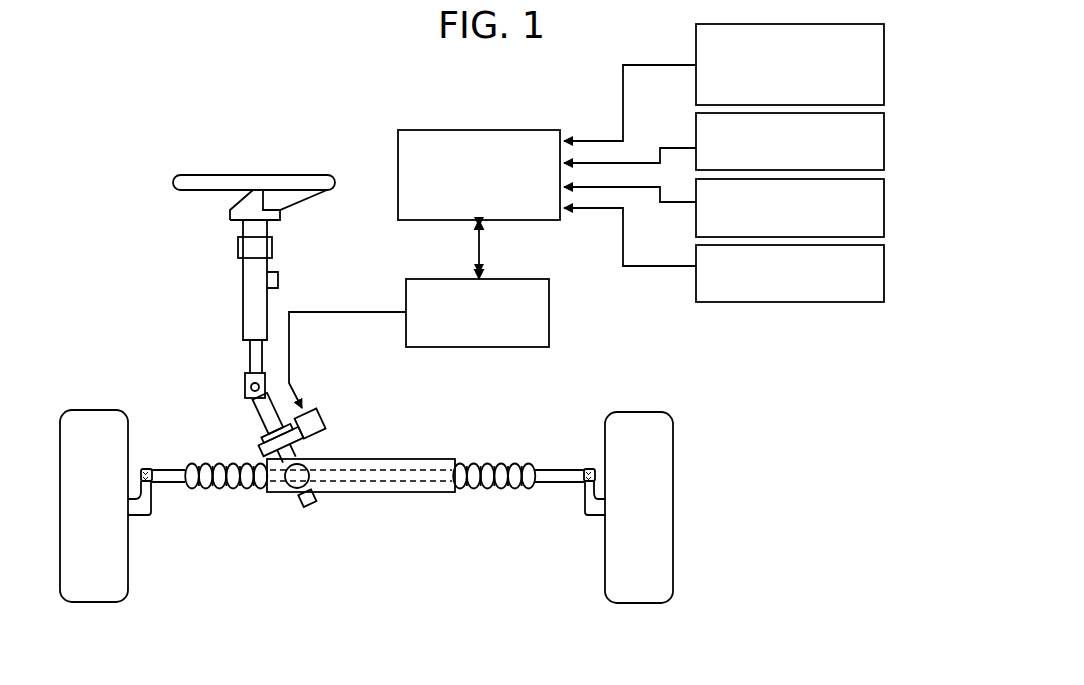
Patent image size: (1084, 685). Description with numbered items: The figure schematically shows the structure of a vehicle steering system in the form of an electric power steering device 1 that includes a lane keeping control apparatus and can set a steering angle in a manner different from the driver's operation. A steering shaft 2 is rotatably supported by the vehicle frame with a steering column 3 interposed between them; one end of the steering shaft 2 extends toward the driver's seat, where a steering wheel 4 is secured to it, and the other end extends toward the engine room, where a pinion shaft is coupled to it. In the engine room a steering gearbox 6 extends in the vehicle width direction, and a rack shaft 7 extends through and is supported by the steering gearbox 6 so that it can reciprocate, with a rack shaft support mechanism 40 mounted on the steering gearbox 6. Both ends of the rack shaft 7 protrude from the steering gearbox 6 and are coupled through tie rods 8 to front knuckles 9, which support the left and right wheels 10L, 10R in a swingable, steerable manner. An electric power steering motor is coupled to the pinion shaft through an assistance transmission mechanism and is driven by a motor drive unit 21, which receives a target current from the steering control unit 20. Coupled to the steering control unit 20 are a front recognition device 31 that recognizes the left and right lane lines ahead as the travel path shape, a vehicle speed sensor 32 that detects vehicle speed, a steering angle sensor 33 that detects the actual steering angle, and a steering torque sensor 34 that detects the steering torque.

The electric power steering device 1 is at (153, 333).
The steering shaft 2 is at (250, 358).
The steering column 3 is at (245, 295).
The steering wheel 4 is at (257, 173).
The steering gearbox 6 is at (383, 492).
The rack shaft 7 is at (434, 461).
The tie rods 8 is at (173, 482).
The front knuckles 9 is at (140, 516).
The right wheel 10R is at (93, 603).
The left wheel 10L is at (638, 604).
The steering control unit 20 is at (480, 128).
The motor drive unit 21 is at (513, 277).
The front recognition device 31 is at (884, 65).
The vehicle speed sensor 32 is at (884, 150).
The steering angle sensor 33 is at (884, 203).
The steering torque sensor 34 is at (884, 268).
The rack shaft support mechanism 40 is at (290, 488).